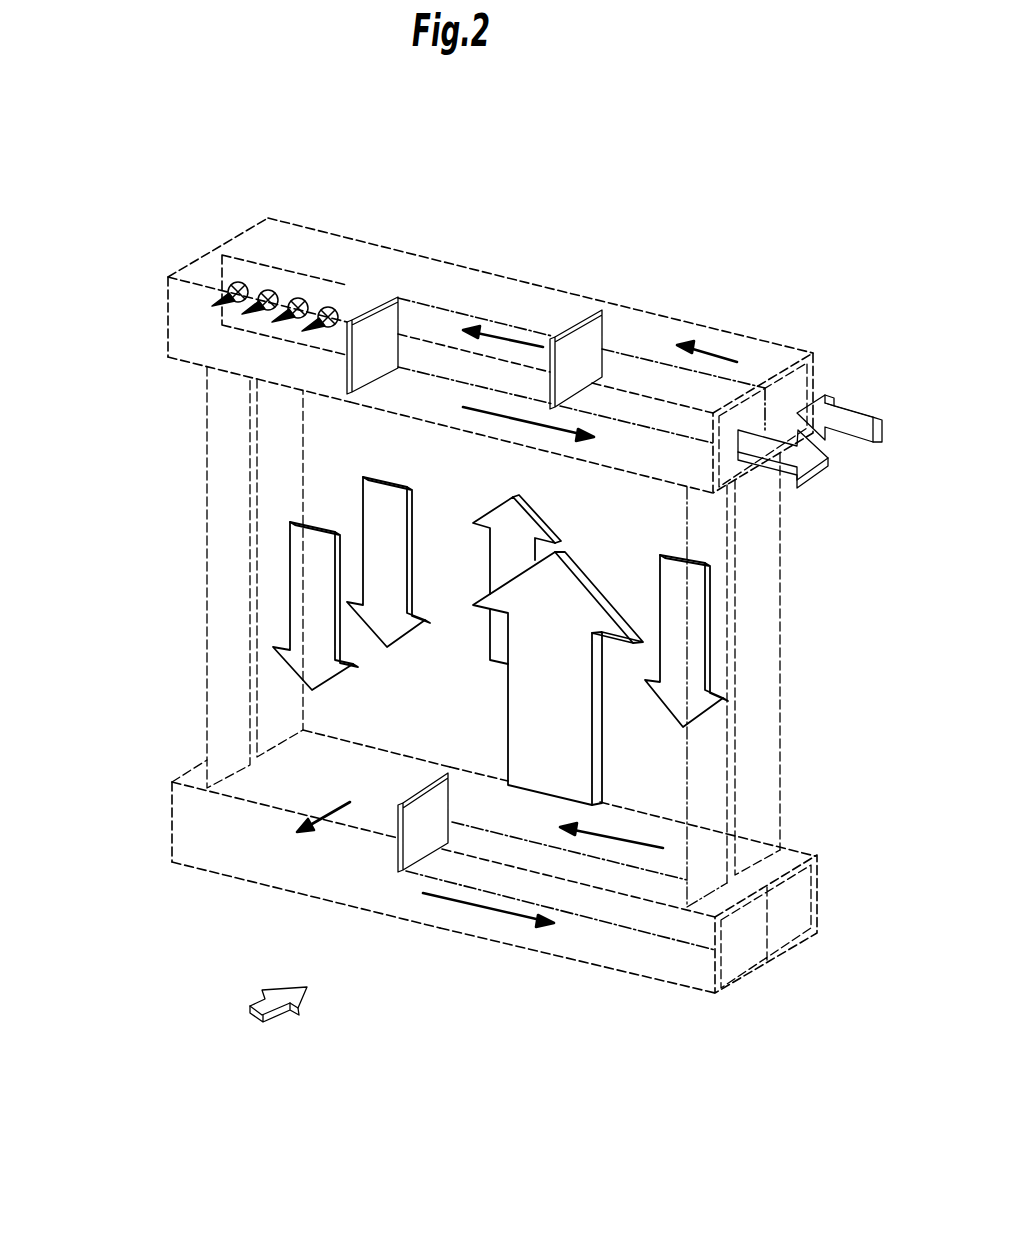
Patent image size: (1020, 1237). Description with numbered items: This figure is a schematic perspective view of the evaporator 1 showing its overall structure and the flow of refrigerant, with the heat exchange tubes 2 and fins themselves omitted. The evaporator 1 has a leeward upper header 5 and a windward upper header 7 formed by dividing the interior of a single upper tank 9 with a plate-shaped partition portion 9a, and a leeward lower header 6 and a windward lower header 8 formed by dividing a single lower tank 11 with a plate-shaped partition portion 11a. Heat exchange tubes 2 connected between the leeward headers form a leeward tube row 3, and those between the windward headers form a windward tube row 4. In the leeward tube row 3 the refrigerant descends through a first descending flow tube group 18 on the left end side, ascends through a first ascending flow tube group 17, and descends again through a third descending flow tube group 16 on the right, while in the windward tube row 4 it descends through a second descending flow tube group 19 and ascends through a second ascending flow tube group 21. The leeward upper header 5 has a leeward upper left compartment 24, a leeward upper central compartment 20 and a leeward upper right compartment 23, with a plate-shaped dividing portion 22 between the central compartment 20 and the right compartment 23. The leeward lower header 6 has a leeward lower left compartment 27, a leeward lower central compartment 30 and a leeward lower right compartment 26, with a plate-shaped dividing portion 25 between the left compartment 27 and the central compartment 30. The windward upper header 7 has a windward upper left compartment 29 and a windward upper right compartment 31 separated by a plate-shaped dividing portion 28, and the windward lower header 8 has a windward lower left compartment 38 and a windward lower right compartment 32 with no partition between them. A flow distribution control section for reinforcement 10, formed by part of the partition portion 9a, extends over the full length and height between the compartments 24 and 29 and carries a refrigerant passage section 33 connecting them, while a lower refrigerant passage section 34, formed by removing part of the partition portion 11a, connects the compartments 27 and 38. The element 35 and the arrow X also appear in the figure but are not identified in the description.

The evaporator 1 is at (713, 193).
The heat exchange tubes 2 is at (735, 560).
The leeward tube row 3 is at (783, 692).
The windward tube row 4 is at (735, 764).
The leeward upper header 5 is at (522, 281).
The leeward lower header 6 is at (820, 878).
The windward upper header 7 is at (160, 360).
The windward lower header 8 is at (200, 872).
The tank 9 is at (708, 324).
The partition portion 9a is at (808, 373).
The flow distribution control section for reinforcement 10 is at (243, 250).
The tank 11 is at (603, 975).
The partition portion 11a is at (773, 907).
The third descending flow tube group 16 is at (710, 637).
The first ascending flow tube group 17 is at (503, 563).
The first descending flow tube group 18 is at (400, 500).
The second descending flow tube group 19 is at (300, 564).
The leeward upper central compartment 20 is at (573, 294).
The second ascending flow tube group 21 is at (583, 725).
The plate-shaped dividing portion 22 is at (588, 333).
The leeward upper right compartment 23 is at (798, 343).
The leeward upper left compartment 24 is at (388, 243).
The plate-shaped dividing portion 25 is at (447, 808).
The leeward lower right compartment 26 is at (686, 823).
The leeward lower left compartment 27 is at (393, 750).
The plate-shaped dividing portion 28 is at (384, 373).
The windward upper left compartment 29 is at (186, 361).
The leeward lower central compartment 30 is at (434, 761).
The windward upper right compartment 31 is at (618, 471).
The windward lower right compartment 32 is at (483, 940).
The refrigerant passage section 33 is at (270, 295).
The lower refrigerant passage section 34 is at (398, 850).
The screw holes 35 is at (328, 313).
The windward lower left compartment 38 is at (252, 885).
The direction X is at (288, 1006).